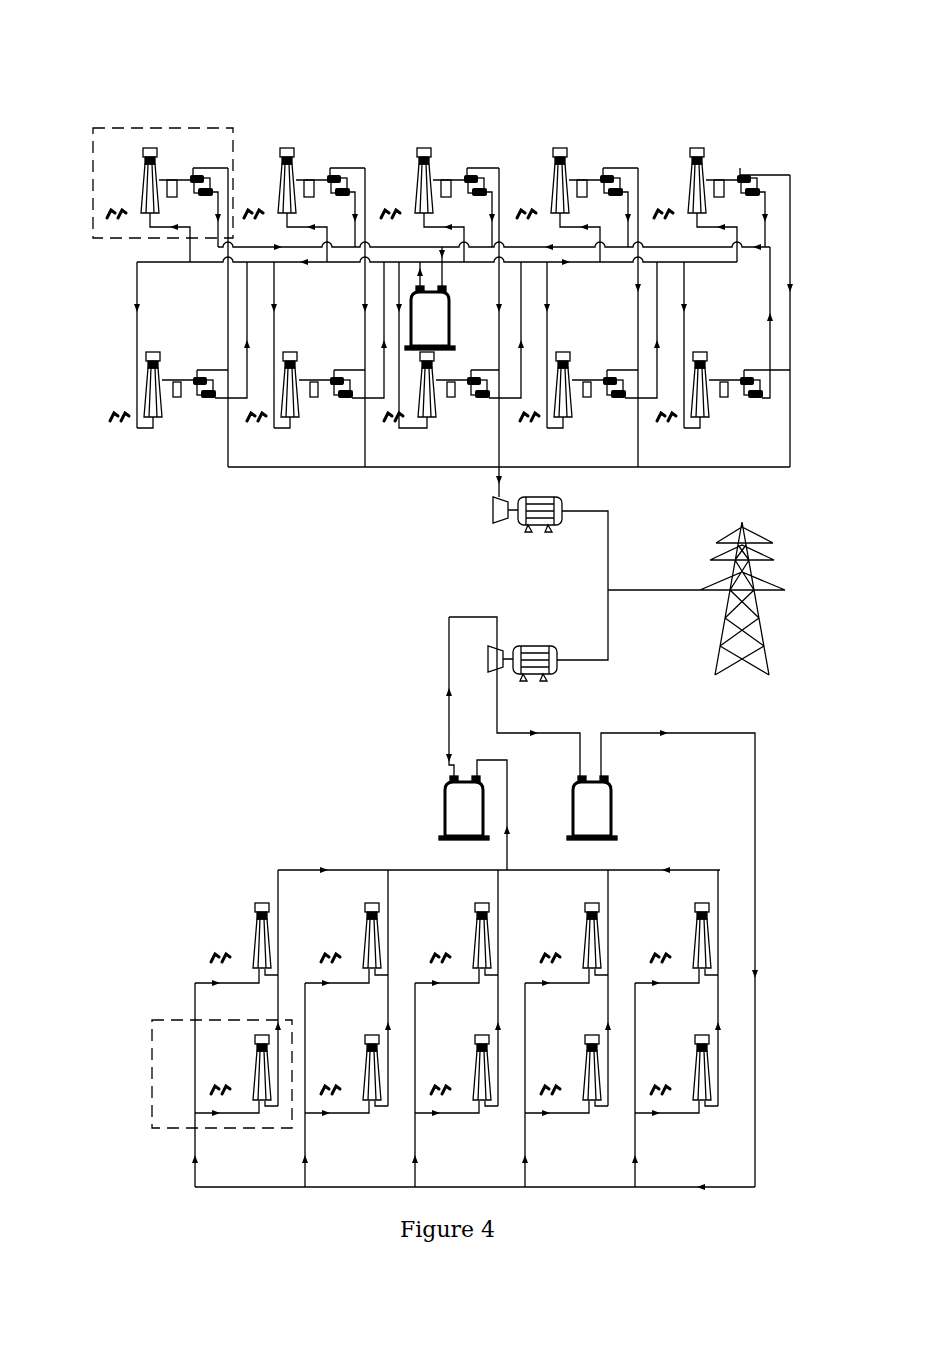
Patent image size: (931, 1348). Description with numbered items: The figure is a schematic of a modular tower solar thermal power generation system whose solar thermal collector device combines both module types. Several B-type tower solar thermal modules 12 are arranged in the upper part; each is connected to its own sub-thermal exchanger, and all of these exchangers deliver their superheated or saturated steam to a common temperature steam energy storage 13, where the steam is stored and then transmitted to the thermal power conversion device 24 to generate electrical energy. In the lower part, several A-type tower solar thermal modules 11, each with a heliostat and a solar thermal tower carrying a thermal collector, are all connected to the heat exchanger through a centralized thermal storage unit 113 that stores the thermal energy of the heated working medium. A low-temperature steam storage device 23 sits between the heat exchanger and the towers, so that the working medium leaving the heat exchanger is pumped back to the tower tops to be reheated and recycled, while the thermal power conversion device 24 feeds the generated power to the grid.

The A-type tower solar thermal module 11 is at (160, 1022).
The B-type tower solar thermal module 12 is at (128, 128).
The common temperature steam energy storage 13 is at (450, 318).
The centralized thermal storage unit 113 is at (443, 808).
The low-temperature steam storage device 23 is at (614, 813).
The thermal power conversion device 24 is at (530, 667).